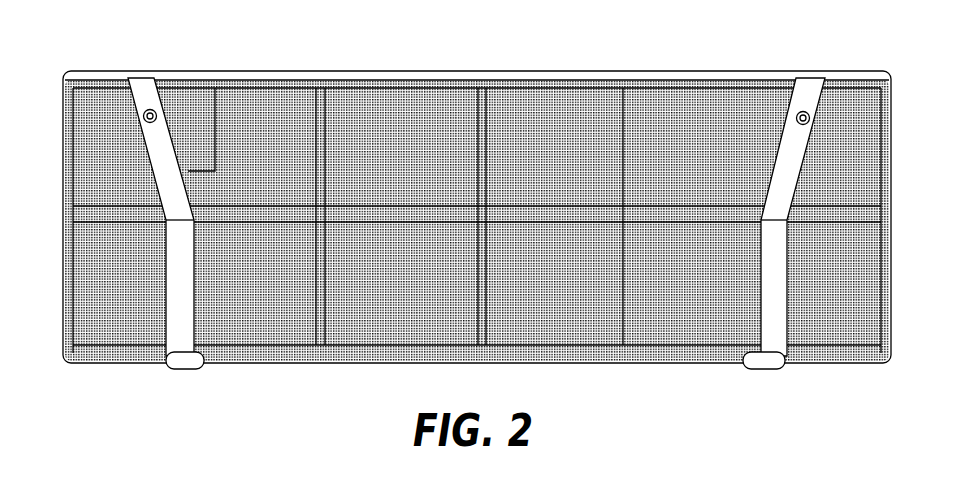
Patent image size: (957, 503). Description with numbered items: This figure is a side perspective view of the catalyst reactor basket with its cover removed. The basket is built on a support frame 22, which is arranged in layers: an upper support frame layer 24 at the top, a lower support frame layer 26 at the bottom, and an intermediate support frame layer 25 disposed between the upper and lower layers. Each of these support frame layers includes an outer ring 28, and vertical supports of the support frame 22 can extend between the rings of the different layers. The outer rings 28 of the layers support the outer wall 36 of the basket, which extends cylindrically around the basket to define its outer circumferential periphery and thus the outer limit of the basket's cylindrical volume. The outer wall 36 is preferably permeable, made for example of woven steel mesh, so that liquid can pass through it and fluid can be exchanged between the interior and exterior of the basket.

The support frame 22 is at (137, 63).
The upper support frame layer 24 is at (705, 62).
The intermediate support frame layer 25 is at (580, 207).
The lower support frame layer 26 is at (673, 353).
The outer ring 28 is at (278, 67).
The outer wall 36 is at (120, 290).